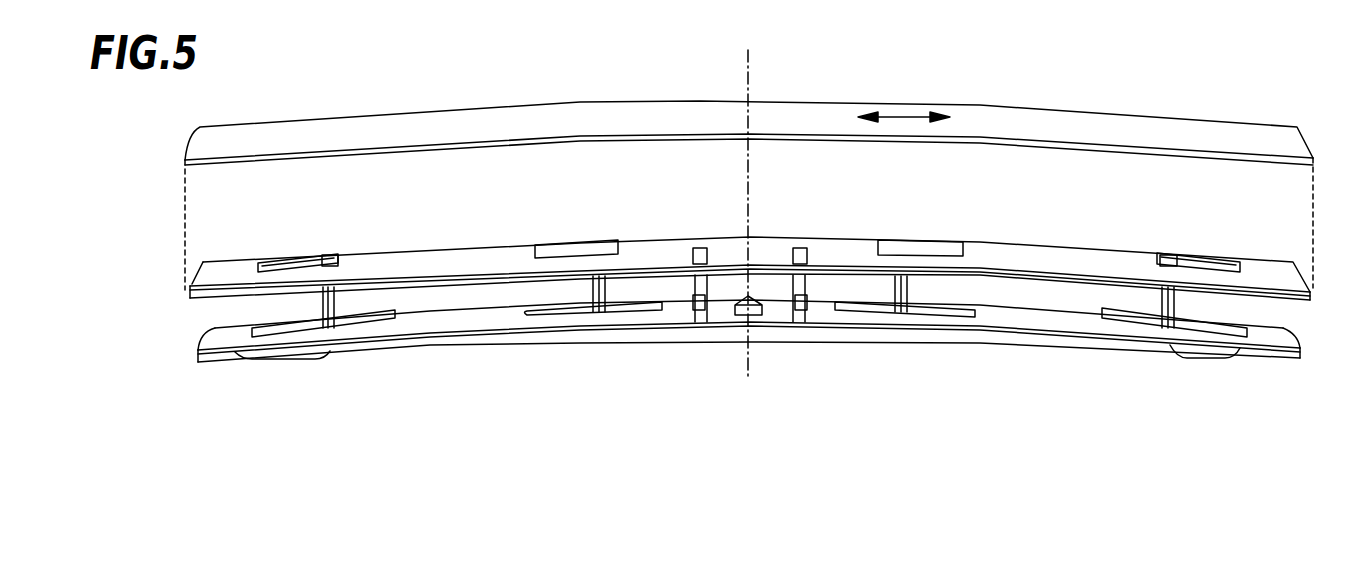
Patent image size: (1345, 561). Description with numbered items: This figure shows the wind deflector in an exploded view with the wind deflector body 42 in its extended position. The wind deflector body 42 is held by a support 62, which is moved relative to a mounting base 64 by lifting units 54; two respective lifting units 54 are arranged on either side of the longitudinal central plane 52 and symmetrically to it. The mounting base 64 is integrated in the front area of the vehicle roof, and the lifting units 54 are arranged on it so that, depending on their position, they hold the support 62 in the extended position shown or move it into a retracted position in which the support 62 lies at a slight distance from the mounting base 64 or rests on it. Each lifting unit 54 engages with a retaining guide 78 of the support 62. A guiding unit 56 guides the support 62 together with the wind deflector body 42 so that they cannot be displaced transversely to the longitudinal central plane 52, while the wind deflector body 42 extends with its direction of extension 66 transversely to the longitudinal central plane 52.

The wind deflector body 42 is at (1220, 132).
The longitudinal central plane 52 is at (752, 78).
The lifting units 54 is at (325, 297).
The guiding unit 56 is at (692, 315).
The support 62 is at (1083, 262).
The mounting base 64 is at (853, 333).
The direction of extension 66 is at (908, 117).
The retaining guide 78 is at (577, 243).